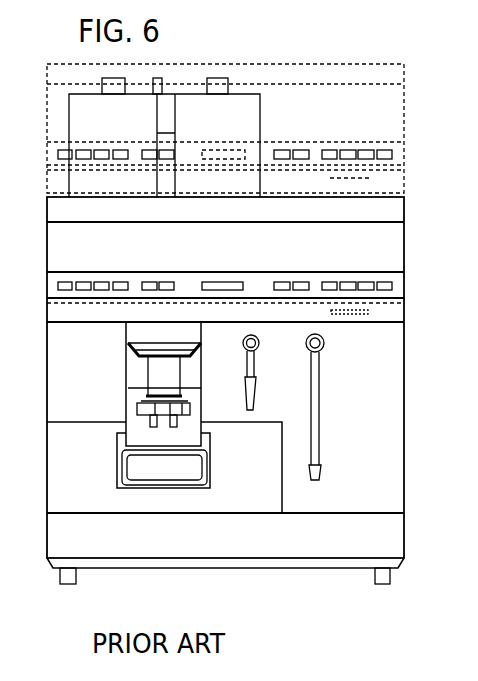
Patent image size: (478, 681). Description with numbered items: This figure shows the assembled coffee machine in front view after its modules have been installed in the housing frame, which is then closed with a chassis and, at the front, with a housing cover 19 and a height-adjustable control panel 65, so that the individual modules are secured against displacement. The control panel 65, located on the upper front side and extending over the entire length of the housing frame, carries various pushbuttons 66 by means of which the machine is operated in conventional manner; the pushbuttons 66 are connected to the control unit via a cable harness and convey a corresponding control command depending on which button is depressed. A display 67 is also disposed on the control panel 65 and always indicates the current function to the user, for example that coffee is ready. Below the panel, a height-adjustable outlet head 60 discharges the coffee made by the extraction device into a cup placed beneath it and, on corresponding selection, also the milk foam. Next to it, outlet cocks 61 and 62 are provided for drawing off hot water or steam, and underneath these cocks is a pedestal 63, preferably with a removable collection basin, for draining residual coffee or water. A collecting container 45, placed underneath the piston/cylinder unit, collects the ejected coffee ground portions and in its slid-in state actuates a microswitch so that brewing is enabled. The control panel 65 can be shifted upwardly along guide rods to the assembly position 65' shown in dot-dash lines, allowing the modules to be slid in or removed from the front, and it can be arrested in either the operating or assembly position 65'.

The assembly position of control panel 65' is at (251, 130).
The control panel 65 is at (248, 377).
The pushbuttons 66 is at (148, 281).
The display 67 is at (226, 281).
The housing cover 19 is at (63, 382).
The outlet head 60 is at (167, 377).
The collecting container 45 is at (70, 473).
The outlet cock 61 is at (254, 376).
The outlet cock 62 is at (318, 375).
The pedestal 63 is at (390, 537).